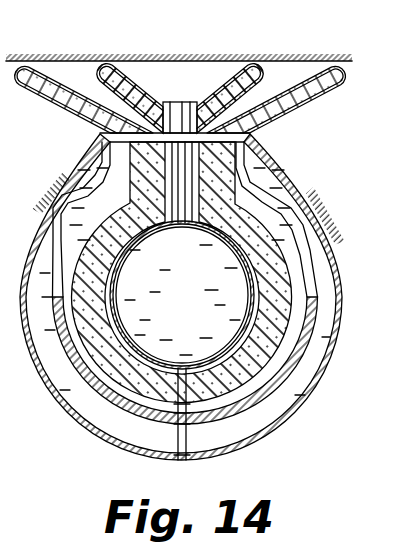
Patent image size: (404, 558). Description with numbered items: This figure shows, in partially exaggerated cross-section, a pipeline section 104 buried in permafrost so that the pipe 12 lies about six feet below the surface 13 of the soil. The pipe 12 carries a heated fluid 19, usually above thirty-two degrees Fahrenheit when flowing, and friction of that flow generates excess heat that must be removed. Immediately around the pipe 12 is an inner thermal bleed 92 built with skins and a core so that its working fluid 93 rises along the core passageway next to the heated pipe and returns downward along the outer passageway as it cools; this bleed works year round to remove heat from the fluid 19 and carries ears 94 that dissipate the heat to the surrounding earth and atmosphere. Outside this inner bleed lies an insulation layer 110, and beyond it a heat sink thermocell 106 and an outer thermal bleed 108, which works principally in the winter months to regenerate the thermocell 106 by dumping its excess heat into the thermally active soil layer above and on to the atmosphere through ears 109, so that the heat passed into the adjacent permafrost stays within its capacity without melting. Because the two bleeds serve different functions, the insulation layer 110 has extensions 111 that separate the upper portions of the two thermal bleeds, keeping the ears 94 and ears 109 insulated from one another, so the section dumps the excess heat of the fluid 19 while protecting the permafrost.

The pipe 12 is at (128, 267).
The surface 13 is at (190, 61).
The fluid 19 is at (198, 328).
The thermal bleed 92 is at (153, 230).
The fluid 93 is at (100, 137).
The ears 94 is at (151, 74).
The section 104 is at (312, 148).
The heat sink thermocell 106 is at (103, 415).
The thermal bleed 108 is at (288, 411).
The ears 109 is at (73, 107).
The insulation layer 110 is at (83, 375).
The extensions 111 is at (95, 85).